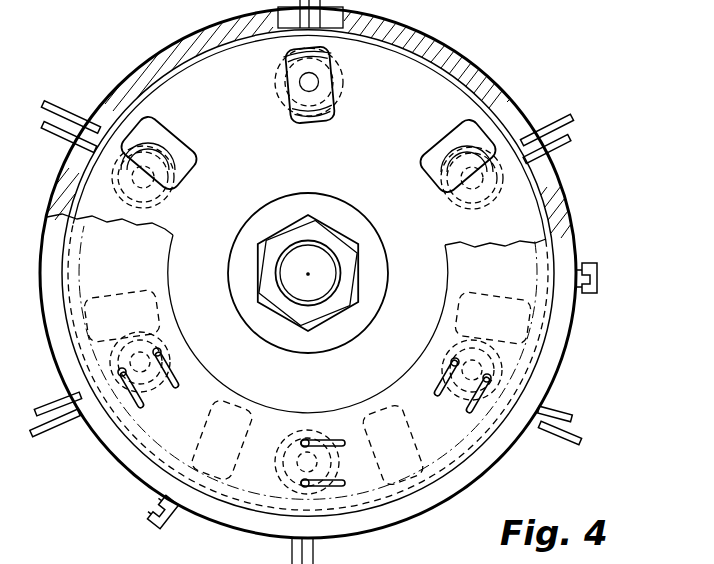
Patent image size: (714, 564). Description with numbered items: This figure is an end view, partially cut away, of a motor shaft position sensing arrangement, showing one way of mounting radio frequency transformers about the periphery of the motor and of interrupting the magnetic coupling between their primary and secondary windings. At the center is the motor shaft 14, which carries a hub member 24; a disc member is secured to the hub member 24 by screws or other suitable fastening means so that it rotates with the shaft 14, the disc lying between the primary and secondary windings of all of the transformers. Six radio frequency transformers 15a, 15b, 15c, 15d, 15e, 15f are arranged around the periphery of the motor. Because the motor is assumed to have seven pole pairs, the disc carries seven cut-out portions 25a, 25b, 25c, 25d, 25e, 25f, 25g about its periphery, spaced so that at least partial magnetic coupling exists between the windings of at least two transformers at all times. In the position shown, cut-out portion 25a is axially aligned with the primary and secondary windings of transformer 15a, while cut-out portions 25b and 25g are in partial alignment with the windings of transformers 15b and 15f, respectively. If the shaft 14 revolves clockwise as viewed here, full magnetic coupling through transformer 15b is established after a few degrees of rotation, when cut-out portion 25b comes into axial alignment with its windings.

The shaft 14 is at (325, 278).
The hub member 24 is at (309, 192).
The radio frequency transformer 15a is at (336, 97).
The radio frequency transformer 15b is at (468, 222).
The radio frequency transformer 15c is at (452, 398).
The radio frequency transformer 15d is at (276, 470).
The radio frequency transformer 15e is at (144, 405).
The radio frequency transformer 15f is at (165, 204).
The cut-out portion 25a is at (320, 118).
The cut-out portion 25b is at (424, 175).
The cut-out portion 25c is at (464, 298).
The cut-out portion 25d is at (415, 432).
The cut-out portion 25e is at (262, 420).
The cut-out portion 25f is at (106, 293).
The cut-out portion 25g is at (178, 136).